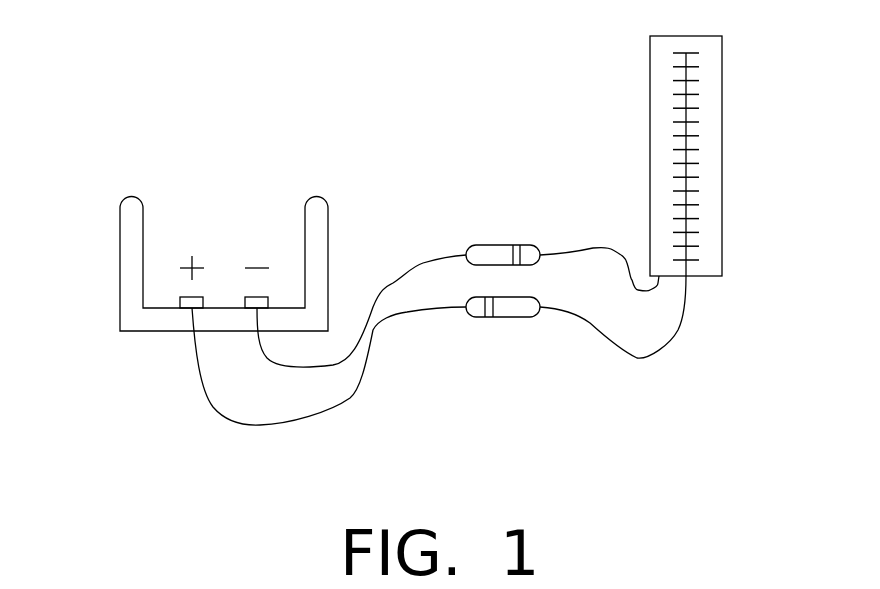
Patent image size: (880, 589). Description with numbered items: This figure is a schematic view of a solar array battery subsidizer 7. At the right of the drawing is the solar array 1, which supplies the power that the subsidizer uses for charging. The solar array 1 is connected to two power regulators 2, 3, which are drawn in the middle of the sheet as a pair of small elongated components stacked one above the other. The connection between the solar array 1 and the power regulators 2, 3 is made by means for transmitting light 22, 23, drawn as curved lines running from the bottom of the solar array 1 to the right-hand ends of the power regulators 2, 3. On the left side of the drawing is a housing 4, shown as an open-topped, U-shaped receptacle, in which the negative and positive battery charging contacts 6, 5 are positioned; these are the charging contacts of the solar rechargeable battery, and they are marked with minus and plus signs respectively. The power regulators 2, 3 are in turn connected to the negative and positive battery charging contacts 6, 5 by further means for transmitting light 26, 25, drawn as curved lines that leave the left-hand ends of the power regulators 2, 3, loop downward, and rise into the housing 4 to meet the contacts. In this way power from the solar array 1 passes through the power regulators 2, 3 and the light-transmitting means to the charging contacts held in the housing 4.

The solar array 1 is at (722, 110).
The power regulator 2 is at (500, 245).
The power regulator 3 is at (510, 317).
The housing 4 is at (117, 238).
The positive battery charging contact 5 is at (180, 297).
The negative battery charging contact 6 is at (245, 297).
The solar array battery subsidizer 7 is at (322, 97).
The means for transmitting light 22 is at (613, 248).
The means for transmitting light 23 is at (650, 358).
The means for transmitting light 25 is at (228, 417).
The means for transmitting light 26 is at (390, 287).